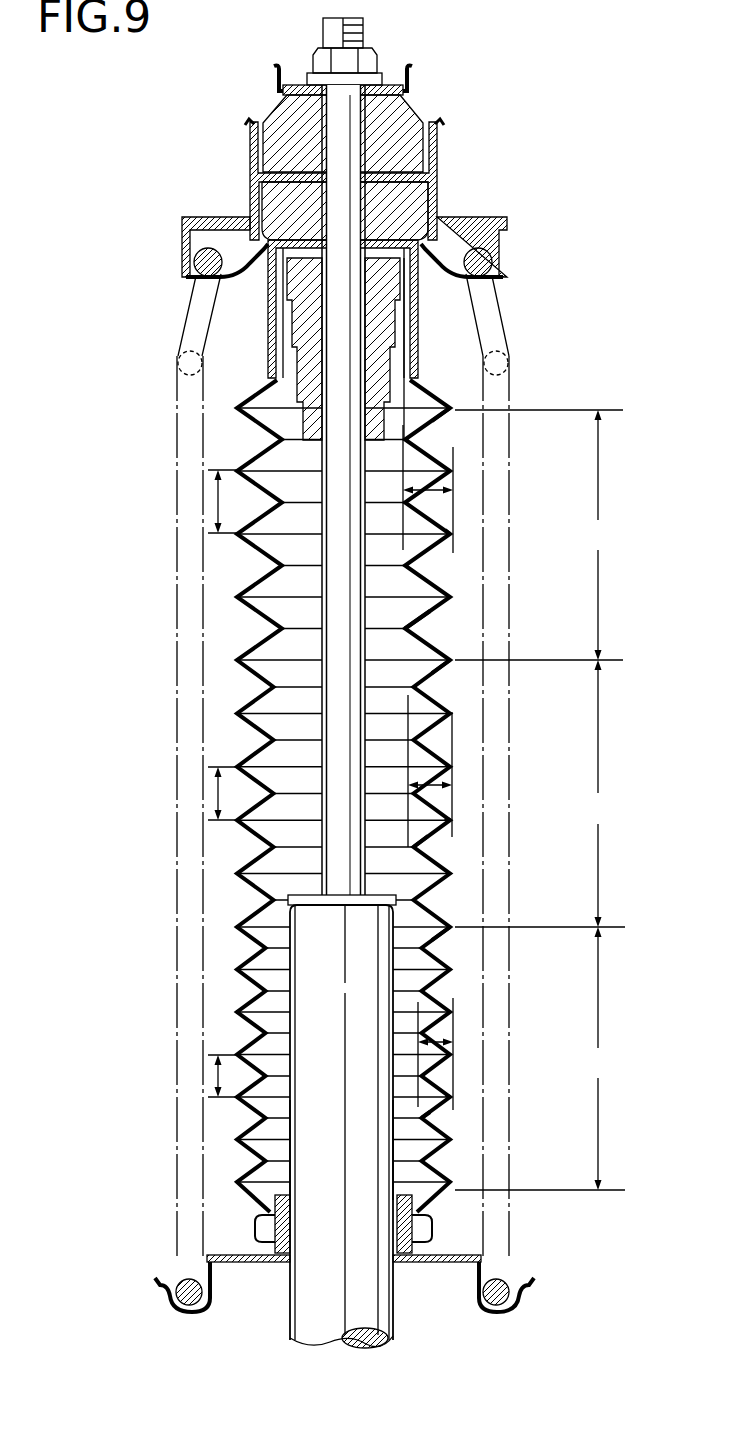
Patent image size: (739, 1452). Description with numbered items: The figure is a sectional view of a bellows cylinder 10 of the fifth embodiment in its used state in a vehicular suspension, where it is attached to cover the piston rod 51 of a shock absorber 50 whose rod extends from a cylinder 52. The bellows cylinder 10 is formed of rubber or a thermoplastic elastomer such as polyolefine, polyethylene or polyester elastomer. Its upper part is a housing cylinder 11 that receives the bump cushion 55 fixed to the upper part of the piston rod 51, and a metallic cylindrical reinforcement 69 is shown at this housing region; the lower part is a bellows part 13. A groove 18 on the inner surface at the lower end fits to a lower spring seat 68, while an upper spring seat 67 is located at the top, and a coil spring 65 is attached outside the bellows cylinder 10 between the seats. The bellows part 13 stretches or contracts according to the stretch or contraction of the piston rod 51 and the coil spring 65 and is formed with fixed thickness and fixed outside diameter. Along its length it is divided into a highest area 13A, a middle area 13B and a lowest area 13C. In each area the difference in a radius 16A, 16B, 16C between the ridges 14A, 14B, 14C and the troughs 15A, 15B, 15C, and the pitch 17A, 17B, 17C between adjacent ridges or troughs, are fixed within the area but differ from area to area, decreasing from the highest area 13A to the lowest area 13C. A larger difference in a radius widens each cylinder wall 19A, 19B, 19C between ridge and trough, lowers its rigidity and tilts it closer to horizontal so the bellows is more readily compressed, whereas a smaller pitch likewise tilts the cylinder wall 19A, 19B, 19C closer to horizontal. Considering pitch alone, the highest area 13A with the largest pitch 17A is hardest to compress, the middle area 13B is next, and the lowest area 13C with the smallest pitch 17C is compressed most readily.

The bellows cylinder 10 is at (233, 575).
The housing cylinder 11 is at (268, 353).
The bellows part 13 is at (246, 866).
The highest area 13A is at (539, 535).
The middle area 13B is at (540, 793).
The lowest area 13C is at (540, 1058).
The ridge 14A is at (445, 530).
The ridge 14B is at (445, 818).
The ridge 14C is at (446, 1095).
The trough 15A is at (430, 627).
The trough 15B is at (428, 843).
The trough 15C is at (430, 1120).
The difference in a radius 16A is at (455, 492).
The difference in a radius 16B is at (455, 787).
The difference in a radius 16C is at (455, 1044).
The pitch 17A is at (214, 507).
The pitch 17B is at (214, 793).
The pitch 17C is at (214, 1077).
The groove 18 is at (256, 1228).
The cylinder wall 19A is at (432, 421).
The cylinder wall 19B is at (432, 673).
The cylinder wall 19C is at (432, 940).
The shock absorber 50 is at (397, 1307).
The piston rod 51 is at (333, 675).
The cylinder 52 is at (307, 1147).
The bump cushion 55 is at (302, 325).
The coil spring 65 is at (176, 963).
The upper spring seat 67 is at (438, 280).
The lower spring seat 68 is at (247, 1263).
The metallic cylindrical reinforcement 69 is at (398, 332).